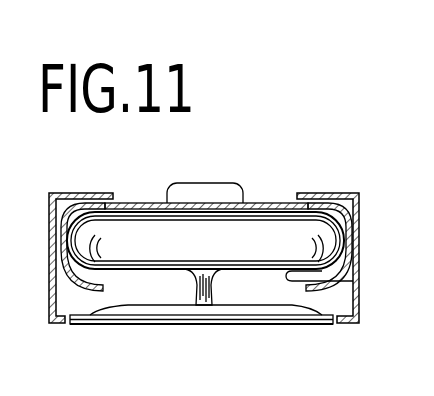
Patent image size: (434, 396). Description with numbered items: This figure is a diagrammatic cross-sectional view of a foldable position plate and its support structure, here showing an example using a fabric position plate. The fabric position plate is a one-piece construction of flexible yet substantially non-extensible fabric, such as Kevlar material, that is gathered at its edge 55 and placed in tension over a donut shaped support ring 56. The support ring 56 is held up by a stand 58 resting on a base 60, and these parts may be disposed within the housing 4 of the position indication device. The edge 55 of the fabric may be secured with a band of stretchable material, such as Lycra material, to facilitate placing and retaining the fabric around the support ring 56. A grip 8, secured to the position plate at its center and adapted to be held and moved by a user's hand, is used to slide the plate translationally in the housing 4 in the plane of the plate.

The housing 4 is at (337, 196).
The grip 8 is at (224, 194).
The edge 55 is at (305, 294).
The support ring 56 is at (345, 276).
The stand 58 is at (190, 272).
The base 60 is at (241, 325).